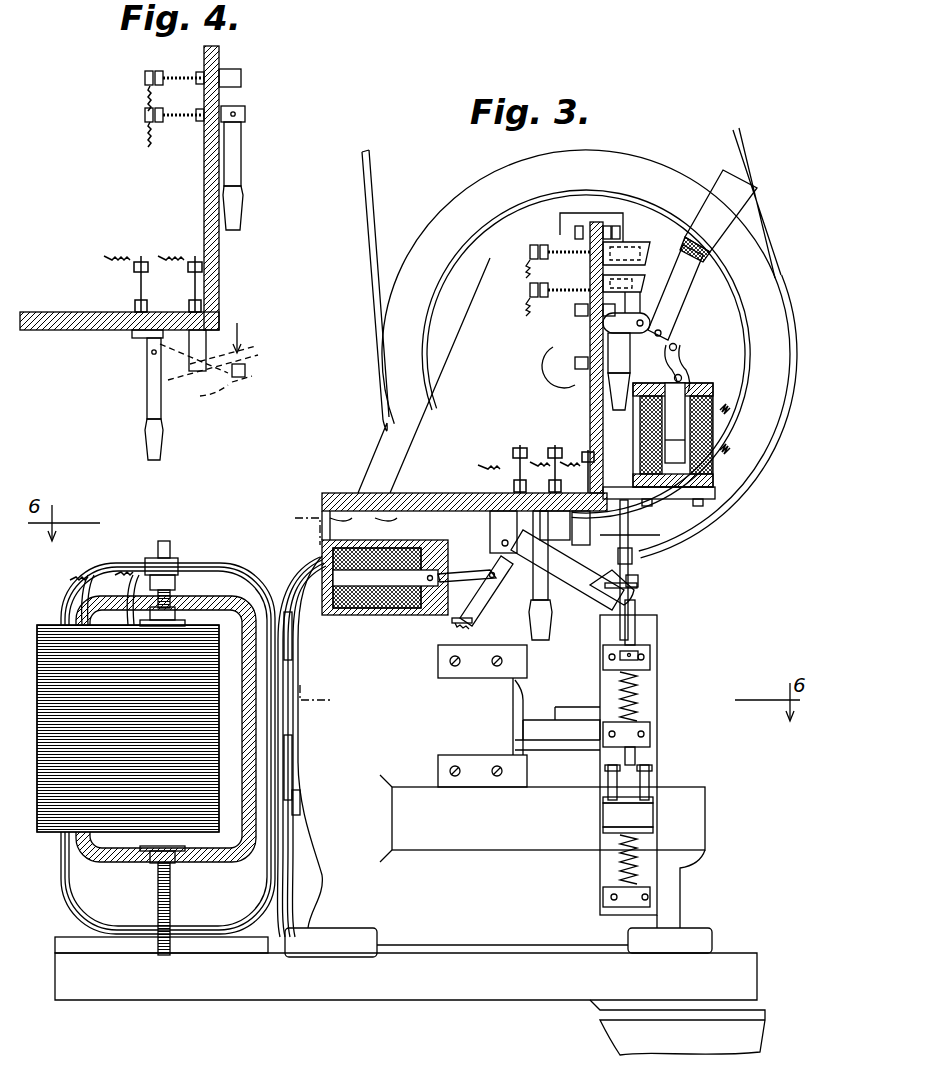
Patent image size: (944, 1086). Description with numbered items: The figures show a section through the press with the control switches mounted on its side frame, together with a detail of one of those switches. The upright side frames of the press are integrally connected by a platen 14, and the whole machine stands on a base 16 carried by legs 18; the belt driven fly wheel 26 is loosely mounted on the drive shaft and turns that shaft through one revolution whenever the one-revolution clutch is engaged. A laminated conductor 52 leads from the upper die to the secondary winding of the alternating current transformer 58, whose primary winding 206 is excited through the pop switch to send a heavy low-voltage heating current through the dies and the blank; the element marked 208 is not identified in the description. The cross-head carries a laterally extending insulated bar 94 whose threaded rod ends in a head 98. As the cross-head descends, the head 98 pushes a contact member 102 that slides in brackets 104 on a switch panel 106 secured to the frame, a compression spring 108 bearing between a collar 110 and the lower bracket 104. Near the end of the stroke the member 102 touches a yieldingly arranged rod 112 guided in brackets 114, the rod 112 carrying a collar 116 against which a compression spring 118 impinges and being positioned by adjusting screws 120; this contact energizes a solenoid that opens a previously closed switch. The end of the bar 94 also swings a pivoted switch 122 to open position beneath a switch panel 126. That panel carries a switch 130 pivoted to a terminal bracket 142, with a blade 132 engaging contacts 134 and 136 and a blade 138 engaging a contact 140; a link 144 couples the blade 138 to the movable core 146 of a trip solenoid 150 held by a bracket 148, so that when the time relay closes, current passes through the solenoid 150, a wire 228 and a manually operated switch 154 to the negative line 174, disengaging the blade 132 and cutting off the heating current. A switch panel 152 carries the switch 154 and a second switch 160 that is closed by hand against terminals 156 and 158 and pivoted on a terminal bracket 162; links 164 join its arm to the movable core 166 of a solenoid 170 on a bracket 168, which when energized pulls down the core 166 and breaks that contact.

In FIG. 3, the platen 14 is at (542, 818).
In FIG. 3, the base 16 is at (406, 964).
In FIG. 3, the legs 18 is at (677, 1030).
In FIG. 3, the fly wheel 26 is at (448, 225).
In FIG. 3, the laminated conductor 52 is at (300, 585).
In FIG. 3, the alternating current transformer 58 is at (120, 702).
In FIG. 4, the insulated bar 94 is at (246, 370).
In FIG. 3, the insulated bar 94 is at (632, 556).
In FIG. 3, the head 98 is at (640, 588).
In FIG. 3, the contact member 102 is at (640, 630).
In FIG. 3, the brackets 104 is at (655, 648).
In FIG. 3, the switch panel 106 is at (657, 765).
In FIG. 3, the compression spring 108 is at (640, 688).
In FIG. 3, the collar 110 is at (640, 660).
In FIG. 3, the contact rod 112 is at (650, 782).
In FIG. 3, the brackets 114 is at (655, 800).
In FIG. 3, the collar 116 is at (603, 830).
In FIG. 3, the compression spring 118 is at (620, 878).
In FIG. 3, the adjusting screws 120 is at (608, 790).
In FIG. 4, the switch 122 is at (147, 396).
In FIG. 3, the switch 122 is at (533, 632).
In FIG. 4, the switch panel 126 is at (70, 331).
In FIG. 3, the switch panel 126 is at (400, 493).
In FIG. 3, the switch 130 is at (640, 600).
In FIG. 3, the blade 132 is at (575, 595).
In FIG. 3, the contact 134 is at (630, 523).
In FIG. 3, the contact 136 is at (625, 538).
In FIG. 3, the blade 138 is at (506, 572).
In FIG. 3, the contact 140 is at (476, 616).
In FIG. 3, the terminal bracket 142 is at (490, 528).
In FIG. 3, the link 144 is at (474, 580).
In FIG. 3, the movable core 146 is at (358, 608).
In FIG. 3, the bracket 148 is at (322, 520).
In FIG. 3, the solenoid 150 is at (400, 586).
In FIG. 3, the switch panel 152 is at (585, 385).
In FIG. 4, the manually operated switch 154 is at (243, 150).
In FIG. 3, the terminal 156 is at (632, 242).
In FIG. 3, the terminal 158 is at (638, 275).
In FIG. 3, the switch 160 is at (684, 268).
In FIG. 3, the terminal bracket 162 is at (575, 326).
In FIG. 3, the links 164 is at (700, 333).
In FIG. 3, the movable core 166 is at (712, 440).
In FIG. 3, the bracket 168 is at (700, 502).
In FIG. 3, the solenoid 170 is at (712, 478).
In FIG. 4, the negative line 174 is at (145, 80).
In FIG. 3, the primary winding 206 is at (228, 858).
In FIG. 3, the frame 208 is at (222, 558).
In FIG. 4, the wire 228 is at (150, 130).